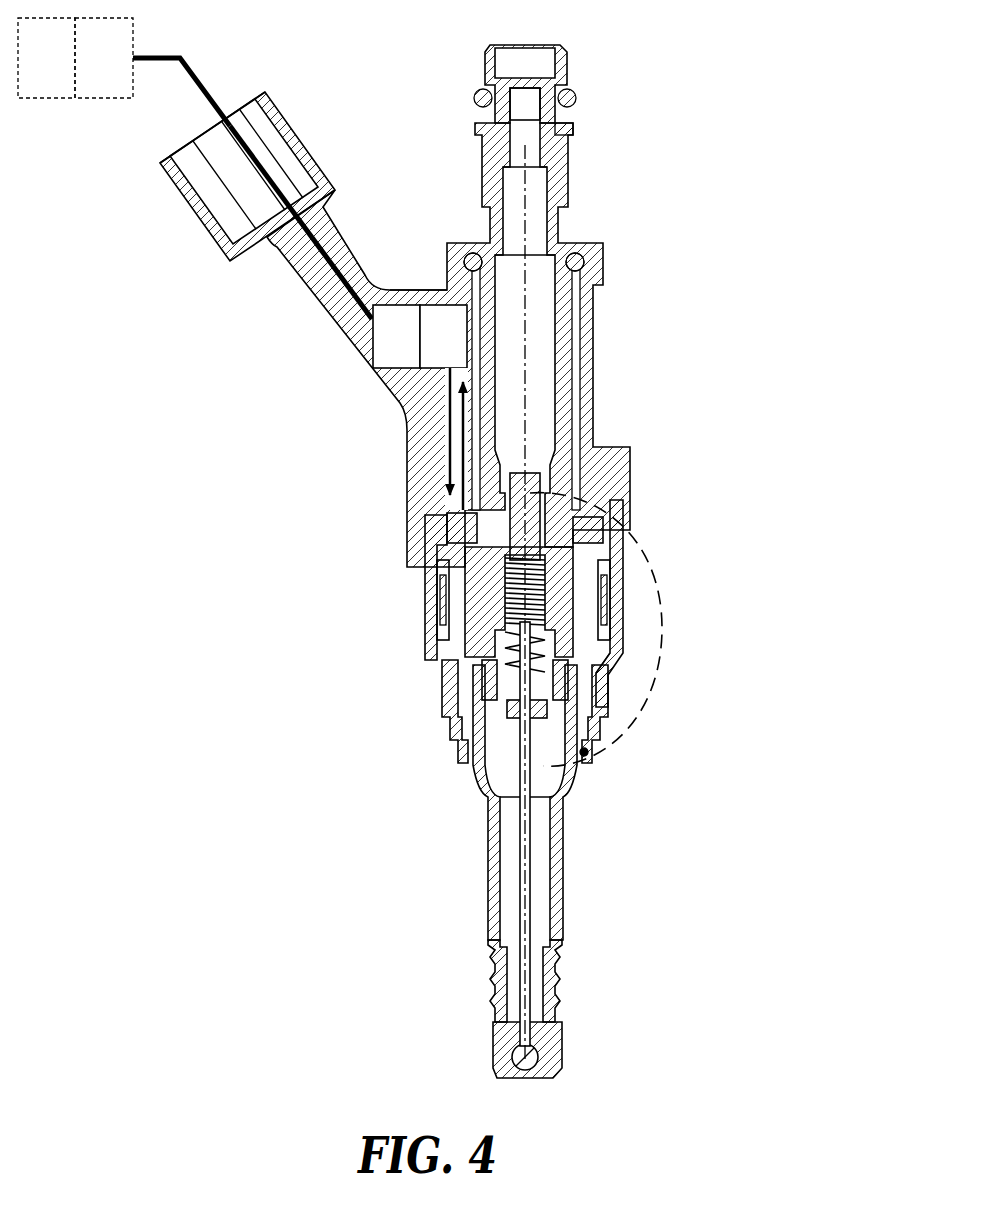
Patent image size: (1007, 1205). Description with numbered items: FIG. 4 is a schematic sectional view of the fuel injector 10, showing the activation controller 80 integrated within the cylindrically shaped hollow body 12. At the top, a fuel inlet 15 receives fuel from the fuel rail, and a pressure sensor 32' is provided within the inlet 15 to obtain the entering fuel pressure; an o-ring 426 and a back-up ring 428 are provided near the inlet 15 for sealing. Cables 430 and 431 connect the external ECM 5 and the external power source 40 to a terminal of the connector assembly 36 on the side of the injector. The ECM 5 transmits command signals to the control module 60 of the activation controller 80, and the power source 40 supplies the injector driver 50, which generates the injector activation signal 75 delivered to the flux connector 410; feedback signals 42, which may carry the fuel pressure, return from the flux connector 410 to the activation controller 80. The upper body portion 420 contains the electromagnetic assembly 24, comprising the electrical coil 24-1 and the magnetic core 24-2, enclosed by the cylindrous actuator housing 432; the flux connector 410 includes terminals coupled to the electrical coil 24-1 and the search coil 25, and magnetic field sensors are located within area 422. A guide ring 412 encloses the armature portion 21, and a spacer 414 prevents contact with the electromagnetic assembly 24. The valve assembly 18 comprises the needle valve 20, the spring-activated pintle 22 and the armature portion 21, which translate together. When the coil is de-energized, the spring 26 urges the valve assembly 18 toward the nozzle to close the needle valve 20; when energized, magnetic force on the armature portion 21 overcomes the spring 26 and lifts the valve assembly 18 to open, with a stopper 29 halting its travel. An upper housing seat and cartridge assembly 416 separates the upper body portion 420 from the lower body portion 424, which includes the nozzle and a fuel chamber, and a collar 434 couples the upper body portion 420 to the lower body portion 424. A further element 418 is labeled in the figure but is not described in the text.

The ECM 5 is at (111, 73).
The power source 40 is at (62, 73).
The fuel injector 10 is at (755, 372).
The body 12 is at (350, 342).
The fuel inlet 15 is at (490, 72).
The valve assembly 18 is at (550, 802).
The needle valve 20 is at (515, 1058).
The armature portion 21 is at (512, 658).
The spring-activated pintle 22 is at (527, 380).
The electromagnetic assembly 24 is at (447, 613).
The electrical coil 24-1 is at (445, 632).
The magnetic core 24-2 is at (565, 570).
The search coil 25 is at (437, 575).
The spring 26 is at (547, 597).
The stopper 29 is at (542, 495).
The pressure sensor 32' is at (456, 86).
The connector assembly 36 is at (205, 240).
The feedback signals 42 is at (455, 425).
The injector driver 50 is at (458, 350).
The control module 60 is at (412, 350).
The injector activation signal 75 is at (457, 458).
The activation controller 80 is at (440, 288).
The flux connector 410 is at (600, 530).
The guide ring 412 is at (485, 680).
The spacer 414 is at (470, 662).
The upper housing seat and cartridge assembly 416 is at (486, 822).
The mounting flange 418 is at (605, 262).
The upper body portion 420 is at (592, 627).
The area 422 is at (662, 587).
The lower body portion 424 is at (585, 752).
The o-ring 426 is at (578, 88).
The back-up ring 428 is at (580, 117).
The cable 430 is at (318, 268).
The cable 431 is at (195, 92).
The actuator housing 432 is at (618, 568).
The collar 434 is at (594, 710).